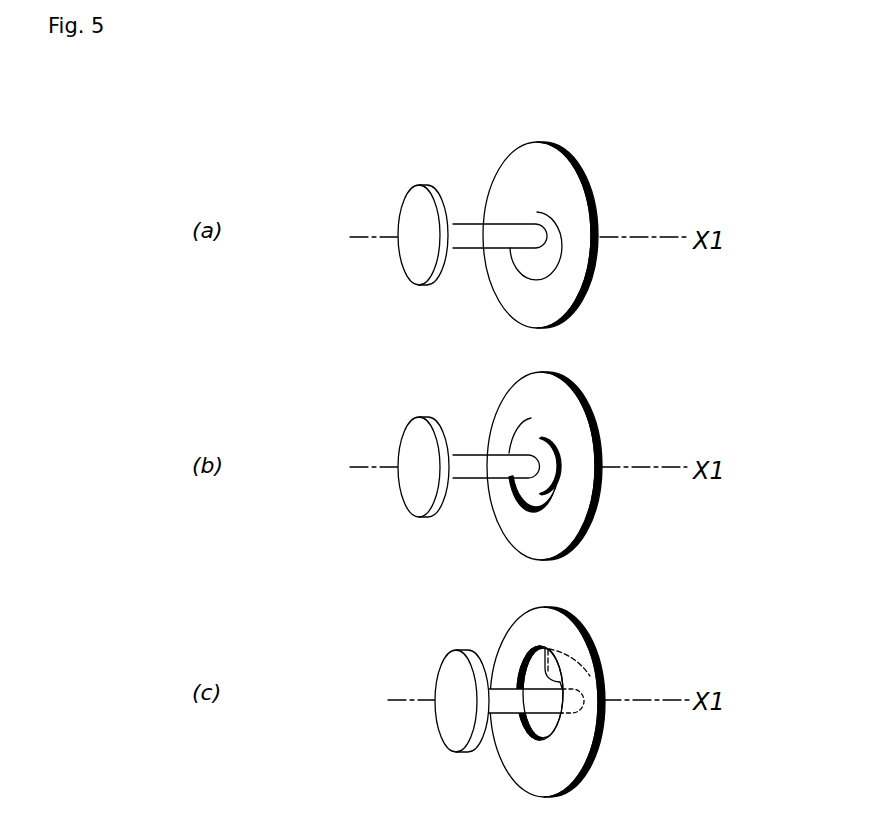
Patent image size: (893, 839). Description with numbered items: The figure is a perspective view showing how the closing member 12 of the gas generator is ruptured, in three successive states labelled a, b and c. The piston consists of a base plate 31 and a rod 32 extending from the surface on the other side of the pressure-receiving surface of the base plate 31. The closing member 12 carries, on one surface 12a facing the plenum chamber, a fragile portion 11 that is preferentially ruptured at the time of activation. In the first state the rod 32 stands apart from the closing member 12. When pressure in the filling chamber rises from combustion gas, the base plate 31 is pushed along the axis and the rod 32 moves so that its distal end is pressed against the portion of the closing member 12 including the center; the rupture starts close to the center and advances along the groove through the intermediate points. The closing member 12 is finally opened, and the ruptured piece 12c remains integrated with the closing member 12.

The fragile portion 11 is at (516, 203).
The closing member 12 is at (568, 152).
The one surface of the closing member 12a is at (526, 163).
The ruptured piece 12c is at (614, 702).
The base plate 31 is at (413, 258).
The rod 32 is at (478, 238).